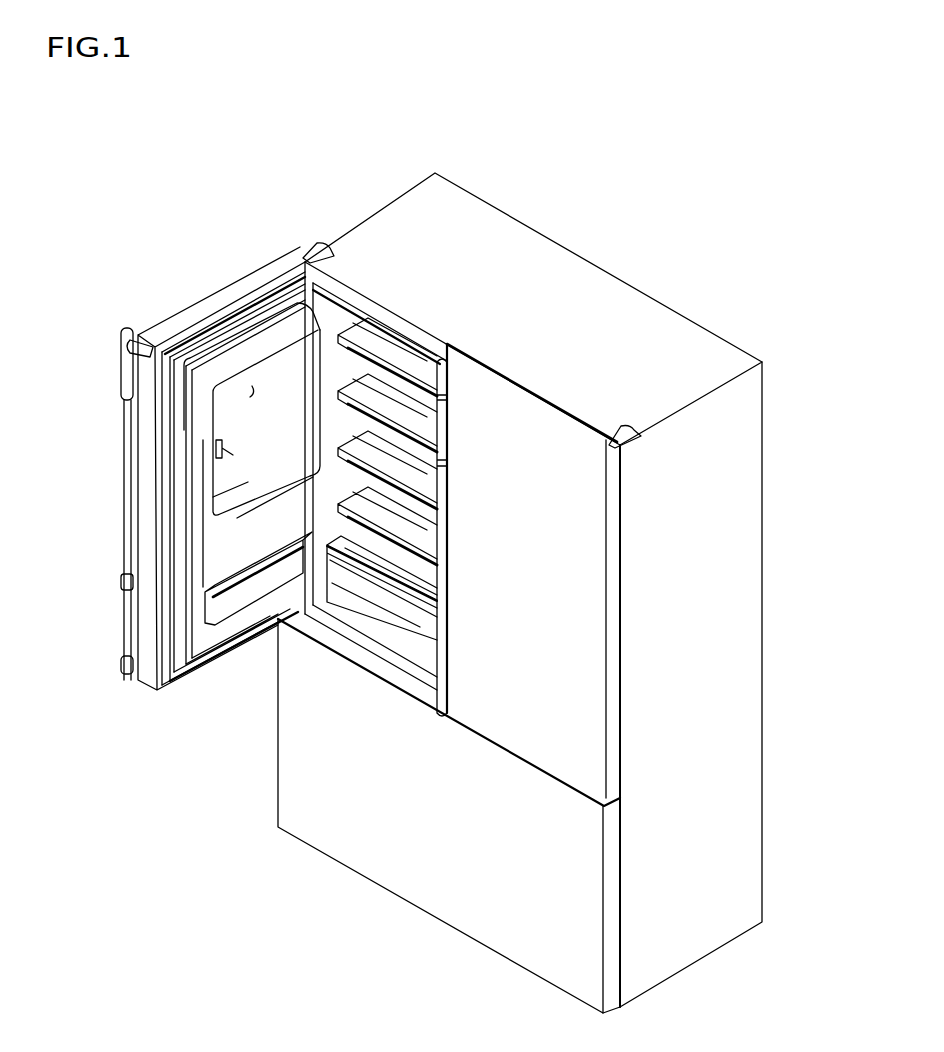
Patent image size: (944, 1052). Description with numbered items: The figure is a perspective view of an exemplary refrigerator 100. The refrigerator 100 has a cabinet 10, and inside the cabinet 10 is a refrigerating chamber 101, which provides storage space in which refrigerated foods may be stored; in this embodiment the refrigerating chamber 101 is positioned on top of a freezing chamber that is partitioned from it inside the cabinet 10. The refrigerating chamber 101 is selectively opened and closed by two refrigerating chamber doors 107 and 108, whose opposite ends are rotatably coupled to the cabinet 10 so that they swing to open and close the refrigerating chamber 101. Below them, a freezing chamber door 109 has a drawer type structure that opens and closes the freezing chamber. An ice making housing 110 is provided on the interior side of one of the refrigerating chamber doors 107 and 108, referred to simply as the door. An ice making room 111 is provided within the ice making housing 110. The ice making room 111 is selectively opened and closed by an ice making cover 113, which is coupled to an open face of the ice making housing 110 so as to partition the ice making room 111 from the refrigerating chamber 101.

The refrigerator 100 is at (640, 229).
The cabinet 10 is at (757, 596).
The refrigerating chamber 101 is at (343, 323).
The refrigerating chamber door 107 is at (122, 360).
The refrigerating chamber door 108 is at (590, 685).
The freezing chamber door 109 is at (358, 858).
The ice making housing 110 is at (232, 360).
The ice making room 111 is at (250, 397).
The ice making cover 113 is at (213, 497).